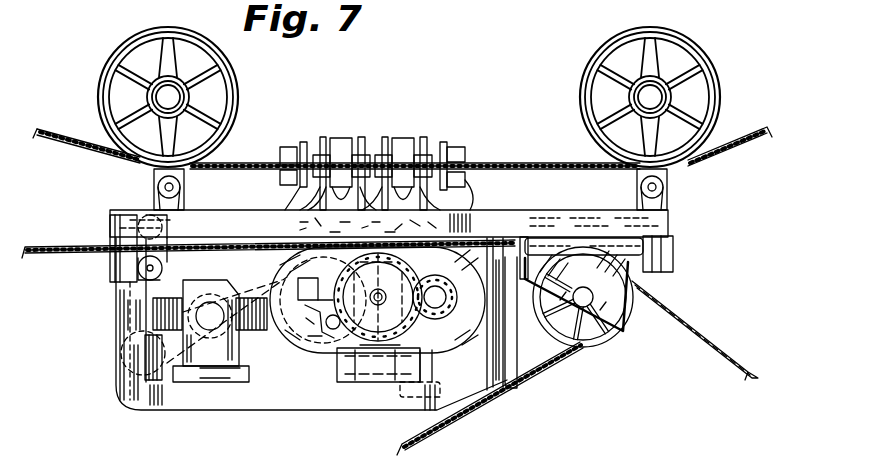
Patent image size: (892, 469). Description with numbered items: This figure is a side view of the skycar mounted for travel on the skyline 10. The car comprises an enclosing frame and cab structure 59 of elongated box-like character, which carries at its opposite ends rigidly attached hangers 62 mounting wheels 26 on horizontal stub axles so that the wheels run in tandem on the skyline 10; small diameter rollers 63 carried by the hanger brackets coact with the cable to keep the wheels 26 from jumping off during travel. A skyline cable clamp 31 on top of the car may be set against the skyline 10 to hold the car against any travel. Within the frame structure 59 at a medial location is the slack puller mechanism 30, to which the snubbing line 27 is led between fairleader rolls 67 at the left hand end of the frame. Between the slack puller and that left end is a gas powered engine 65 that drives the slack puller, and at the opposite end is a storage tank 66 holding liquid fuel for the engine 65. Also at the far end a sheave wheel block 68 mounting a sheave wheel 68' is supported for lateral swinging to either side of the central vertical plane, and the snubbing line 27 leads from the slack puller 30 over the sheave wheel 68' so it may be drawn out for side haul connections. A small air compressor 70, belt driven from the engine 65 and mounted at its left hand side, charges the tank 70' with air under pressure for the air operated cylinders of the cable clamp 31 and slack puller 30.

The skyline 10 is at (66, 132).
The wheels 26 is at (232, 105).
The snubbing line 27 is at (72, 247).
The slack puller mechanism 30 is at (316, 355).
The skyline cable clamp 31 is at (415, 130).
The enclosing frame and cab structure 59 is at (497, 222).
The hangers 62 is at (152, 173).
The small diameter rollers 63 is at (152, 188).
The gas powered engine 65 is at (175, 360).
The storage tank 66 is at (377, 372).
The fairleader rolls 67 is at (163, 230).
The sheave wheel block 68 is at (690, 324).
The sheave wheel 68' is at (598, 301).
The air compressor 70 is at (113, 355).
The tank 70' is at (464, 382).